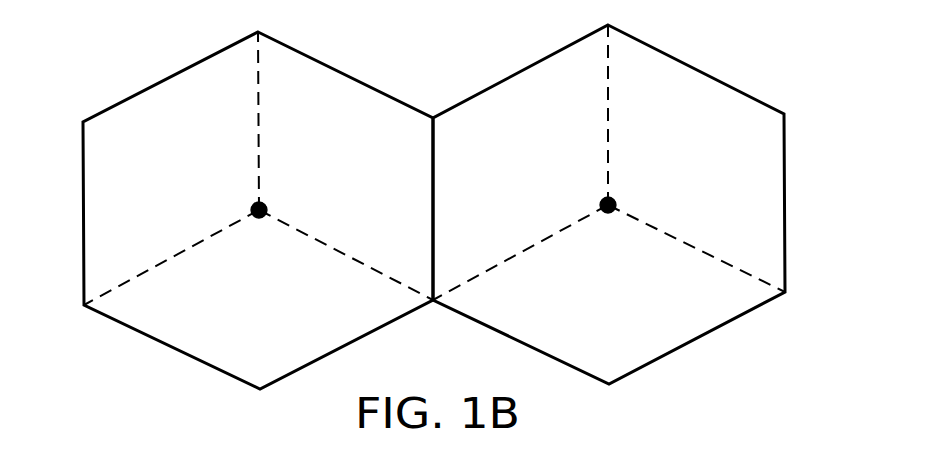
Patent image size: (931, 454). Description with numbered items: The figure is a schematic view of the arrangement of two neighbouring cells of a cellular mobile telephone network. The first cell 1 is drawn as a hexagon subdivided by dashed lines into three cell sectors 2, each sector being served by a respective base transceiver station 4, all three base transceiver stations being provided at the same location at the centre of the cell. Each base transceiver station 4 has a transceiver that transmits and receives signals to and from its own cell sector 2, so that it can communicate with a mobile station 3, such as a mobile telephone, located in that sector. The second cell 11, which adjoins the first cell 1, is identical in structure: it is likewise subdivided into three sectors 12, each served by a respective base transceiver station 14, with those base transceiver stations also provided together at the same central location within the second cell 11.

The cell 1 is at (146, 88).
The cell sectors 2 is at (184, 160).
The mobile station 3 is at (450, 122).
The base transceiver station 4 is at (242, 208).
The neighbouring cell 11 is at (720, 80).
The sectors 12 is at (544, 155).
The base transceiver station 14 is at (632, 203).